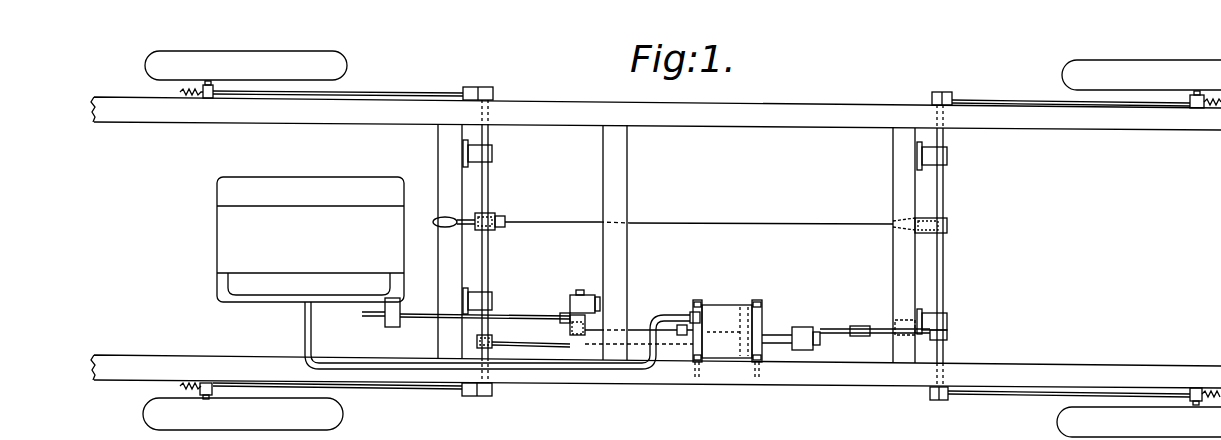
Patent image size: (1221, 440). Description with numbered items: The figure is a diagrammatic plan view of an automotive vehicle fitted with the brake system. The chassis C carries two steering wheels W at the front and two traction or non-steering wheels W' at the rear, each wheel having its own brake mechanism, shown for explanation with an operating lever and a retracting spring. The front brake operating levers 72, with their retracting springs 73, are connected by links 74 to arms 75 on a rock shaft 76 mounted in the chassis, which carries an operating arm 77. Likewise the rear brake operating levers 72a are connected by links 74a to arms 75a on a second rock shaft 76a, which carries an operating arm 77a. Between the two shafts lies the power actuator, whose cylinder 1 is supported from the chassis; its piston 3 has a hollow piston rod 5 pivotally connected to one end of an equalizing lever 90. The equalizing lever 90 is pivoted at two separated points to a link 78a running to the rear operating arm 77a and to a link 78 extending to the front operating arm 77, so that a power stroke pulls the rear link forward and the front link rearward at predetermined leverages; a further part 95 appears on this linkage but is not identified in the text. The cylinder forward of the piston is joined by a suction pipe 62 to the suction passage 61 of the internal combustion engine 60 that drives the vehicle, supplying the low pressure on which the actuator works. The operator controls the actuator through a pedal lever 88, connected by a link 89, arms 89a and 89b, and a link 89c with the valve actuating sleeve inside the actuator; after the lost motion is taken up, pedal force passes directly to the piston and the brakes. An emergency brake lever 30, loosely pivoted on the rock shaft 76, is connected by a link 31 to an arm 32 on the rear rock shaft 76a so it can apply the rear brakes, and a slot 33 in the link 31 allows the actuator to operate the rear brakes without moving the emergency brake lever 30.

The cylinder 1 is at (712, 316).
The piston 3 is at (740, 312).
The piston rod 5 is at (775, 334).
The emergency brake lever 30 is at (472, 229).
The link 31 is at (730, 222).
The arm 32 is at (933, 222).
The slot 33 is at (926, 233).
The internal combustion engine 60 is at (280, 218).
The suction passage 61 is at (240, 283).
The suction pipe 62 is at (304, 327).
The operating lever 72 is at (211, 84).
The operating lever 72a is at (1196, 94).
The retracting spring 73 is at (180, 92).
The link 74 is at (387, 96).
The link 74a is at (1019, 102).
The arm 75 is at (477, 94).
The arm 75a is at (948, 98).
The rock shaft 76 is at (487, 191).
The rock shaft 76a is at (944, 279).
The operating arm 77 is at (490, 348).
The operating arm 77a is at (948, 334).
The link 78 is at (548, 345).
The link 78a is at (918, 339).
The pedal lever 88 is at (376, 312).
The link 89 is at (518, 315).
The arm 89a is at (562, 312).
The arm 89b is at (570, 333).
The link 89c is at (640, 330).
The equalizing lever 90 is at (800, 328).
The coupling 95 is at (858, 327).
The chassis C is at (990, 373).
The steering wheel W is at (257, 236).
The traction wheel W' is at (1139, 237).